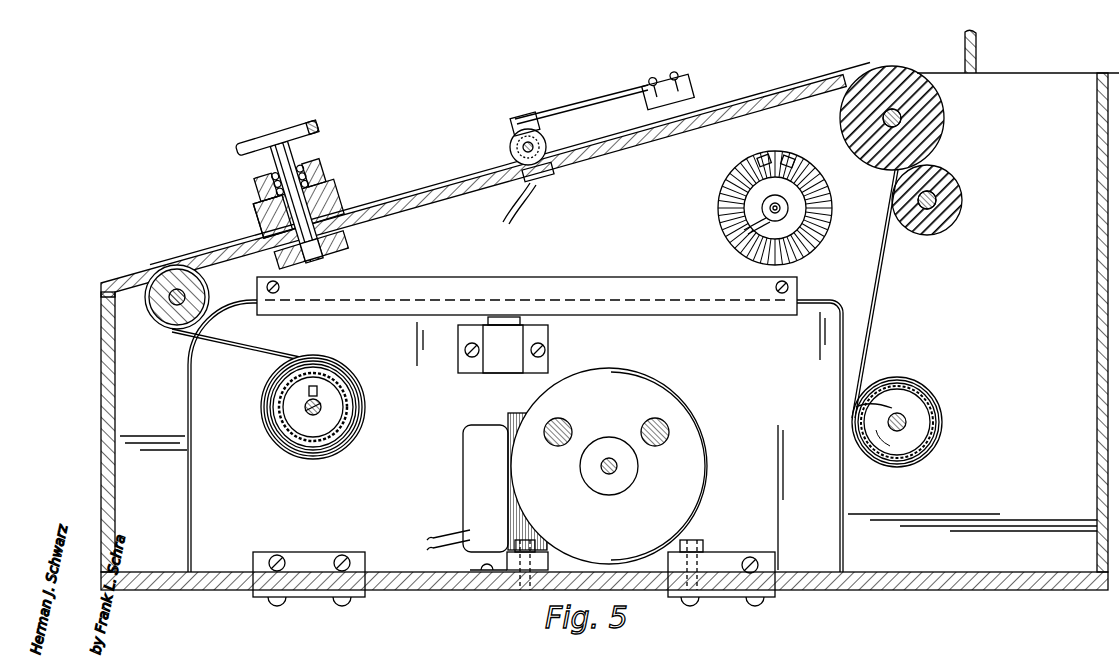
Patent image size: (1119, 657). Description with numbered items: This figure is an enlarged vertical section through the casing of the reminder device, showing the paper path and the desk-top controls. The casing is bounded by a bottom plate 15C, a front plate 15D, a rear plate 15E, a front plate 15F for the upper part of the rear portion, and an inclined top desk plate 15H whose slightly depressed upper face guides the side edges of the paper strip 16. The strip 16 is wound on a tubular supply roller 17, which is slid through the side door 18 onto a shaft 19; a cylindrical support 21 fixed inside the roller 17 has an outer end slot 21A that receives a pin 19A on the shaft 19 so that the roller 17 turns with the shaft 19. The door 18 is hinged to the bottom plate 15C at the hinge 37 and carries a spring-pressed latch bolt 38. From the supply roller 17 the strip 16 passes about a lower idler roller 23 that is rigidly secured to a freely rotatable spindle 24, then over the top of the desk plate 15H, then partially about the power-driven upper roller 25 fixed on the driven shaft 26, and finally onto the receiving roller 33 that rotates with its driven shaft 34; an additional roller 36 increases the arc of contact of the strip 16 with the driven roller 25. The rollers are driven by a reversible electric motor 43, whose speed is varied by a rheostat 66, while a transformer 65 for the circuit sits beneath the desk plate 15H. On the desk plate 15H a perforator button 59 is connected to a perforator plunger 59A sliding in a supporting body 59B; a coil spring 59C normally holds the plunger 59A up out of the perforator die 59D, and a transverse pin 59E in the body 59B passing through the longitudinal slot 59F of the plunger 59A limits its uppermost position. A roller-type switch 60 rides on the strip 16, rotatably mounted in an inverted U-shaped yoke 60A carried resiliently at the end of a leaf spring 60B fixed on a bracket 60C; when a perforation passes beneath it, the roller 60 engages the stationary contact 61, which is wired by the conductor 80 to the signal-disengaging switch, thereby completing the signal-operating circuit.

The bottom plate 15C is at (160, 578).
The front plate 15D is at (103, 405).
The rear plate 15E is at (1096, 184).
The front plate for the upper part of the rear portion 15F is at (978, 46).
The top desk plate 15H is at (452, 208).
The paper strip 16 is at (444, 188).
The supply roller 17 is at (348, 400).
The side door 18 is at (198, 490).
The shaft 19 is at (322, 407).
The pin 19A is at (306, 411).
The cylindrical support 21 is at (330, 424).
The outer end slot 21A is at (300, 396).
The lower idler roller 23 is at (170, 300).
The spindle 24 is at (158, 306).
The power-driven upper roller 25 is at (925, 136).
The driven shaft 26 is at (905, 118).
The receiving roller 33 is at (935, 408).
The driven shaft 34 is at (906, 424).
The additional roller 36 is at (950, 212).
The hinge 37 is at (305, 598).
The spring-pressed latch bolt 38 is at (500, 362).
The reversible electric motor 43 is at (682, 452).
The perforator button 59 is at (252, 140).
The perforator plunger 59A is at (270, 220).
The supporting body 59B is at (318, 190).
The coil spring 59C is at (292, 152).
The perforator die 59D is at (322, 242).
The transverse pin 59E is at (265, 196).
The longitudinal slot 59F is at (262, 172).
The roller-type switch 60 is at (547, 143).
The inverted U-shaped yoke 60A is at (512, 126).
The leaf spring 60B is at (588, 104).
The bracket 60C is at (696, 91).
The stationary contact 61 is at (555, 173).
The transformer 65 is at (470, 468).
The rheostat 66 is at (738, 213).
The conductor 80 is at (503, 216).